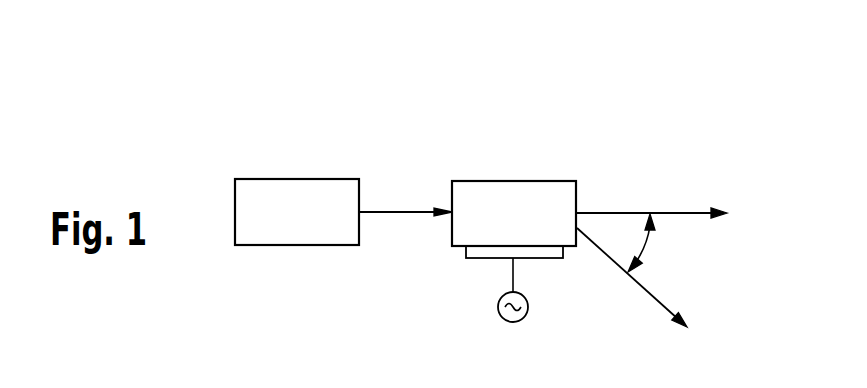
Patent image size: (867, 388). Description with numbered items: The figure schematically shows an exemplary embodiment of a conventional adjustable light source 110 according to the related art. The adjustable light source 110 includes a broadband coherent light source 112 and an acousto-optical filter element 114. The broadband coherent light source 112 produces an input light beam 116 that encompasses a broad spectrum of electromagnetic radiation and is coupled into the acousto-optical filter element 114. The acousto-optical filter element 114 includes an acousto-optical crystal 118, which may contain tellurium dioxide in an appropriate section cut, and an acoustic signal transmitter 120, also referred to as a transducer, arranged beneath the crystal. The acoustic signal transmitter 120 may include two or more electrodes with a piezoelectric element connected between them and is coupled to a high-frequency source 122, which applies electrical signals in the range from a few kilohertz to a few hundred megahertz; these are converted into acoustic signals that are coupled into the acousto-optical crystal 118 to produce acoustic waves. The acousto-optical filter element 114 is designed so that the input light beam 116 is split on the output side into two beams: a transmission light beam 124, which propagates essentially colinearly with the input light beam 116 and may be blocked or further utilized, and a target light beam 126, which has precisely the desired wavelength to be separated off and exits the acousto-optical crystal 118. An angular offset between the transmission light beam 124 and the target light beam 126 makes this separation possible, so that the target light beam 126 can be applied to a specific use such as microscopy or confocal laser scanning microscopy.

The adjustable light source 110 is at (365, 115).
The broadband coherent light source 112 is at (320, 227).
The acousto-optical filter element 114 is at (560, 142).
The input light beam 116 is at (407, 212).
The acousto-optical crystal 118 is at (535, 227).
The acoustic signal transmitter 120 is at (483, 254).
The high-frequency source 122 is at (528, 307).
The transmission light beam 124 is at (617, 213).
The target light beam 126 is at (647, 287).